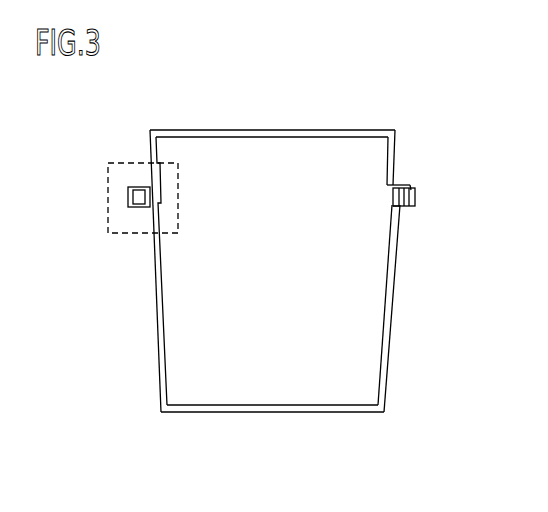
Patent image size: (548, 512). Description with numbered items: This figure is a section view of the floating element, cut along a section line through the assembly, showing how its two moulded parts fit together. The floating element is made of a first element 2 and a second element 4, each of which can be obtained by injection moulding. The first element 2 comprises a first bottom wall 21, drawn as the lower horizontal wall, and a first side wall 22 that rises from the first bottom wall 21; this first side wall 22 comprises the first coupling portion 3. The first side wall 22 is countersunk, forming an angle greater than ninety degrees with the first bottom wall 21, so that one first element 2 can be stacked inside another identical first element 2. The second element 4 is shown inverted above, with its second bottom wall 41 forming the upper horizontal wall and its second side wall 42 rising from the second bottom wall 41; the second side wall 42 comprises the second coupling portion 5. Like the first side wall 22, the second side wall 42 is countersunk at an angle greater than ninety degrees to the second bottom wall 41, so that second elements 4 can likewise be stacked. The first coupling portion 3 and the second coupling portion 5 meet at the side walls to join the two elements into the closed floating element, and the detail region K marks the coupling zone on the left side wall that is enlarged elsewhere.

The first element 2 is at (274, 313).
The first bottom wall 21 is at (284, 412).
The first side wall 22 is at (153, 358).
The first coupling portion 3 is at (409, 212).
The second element 4 is at (325, 123).
The second bottom wall 41 is at (232, 130).
The second side wall 42 is at (394, 144).
The second coupling portion 5 is at (413, 184).
The detail region K is at (106, 234).